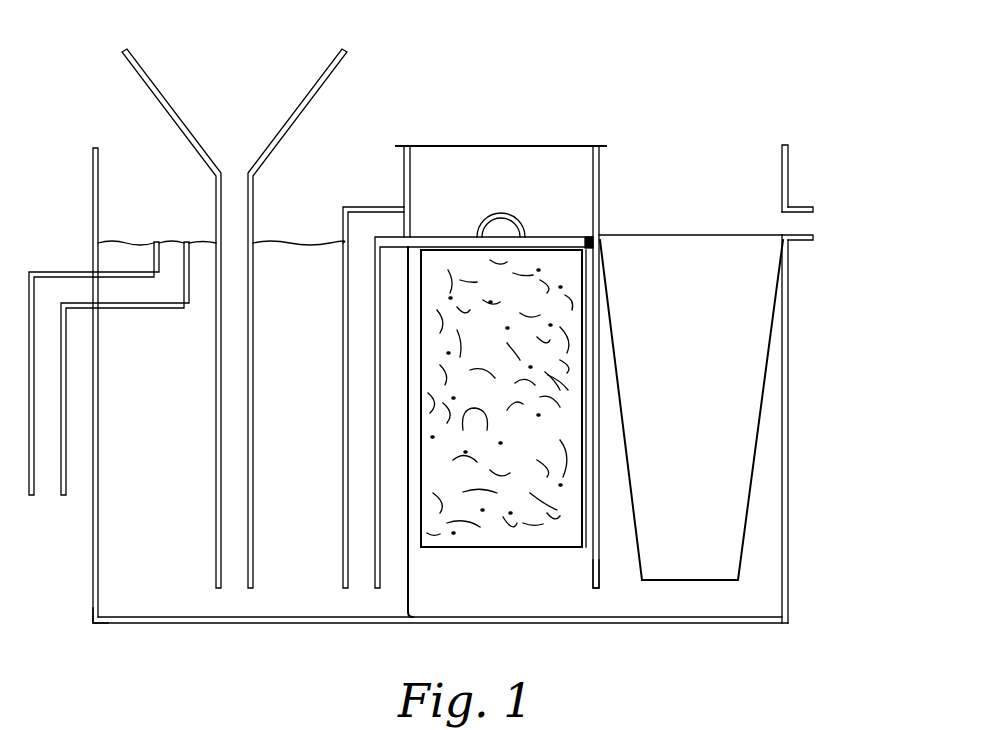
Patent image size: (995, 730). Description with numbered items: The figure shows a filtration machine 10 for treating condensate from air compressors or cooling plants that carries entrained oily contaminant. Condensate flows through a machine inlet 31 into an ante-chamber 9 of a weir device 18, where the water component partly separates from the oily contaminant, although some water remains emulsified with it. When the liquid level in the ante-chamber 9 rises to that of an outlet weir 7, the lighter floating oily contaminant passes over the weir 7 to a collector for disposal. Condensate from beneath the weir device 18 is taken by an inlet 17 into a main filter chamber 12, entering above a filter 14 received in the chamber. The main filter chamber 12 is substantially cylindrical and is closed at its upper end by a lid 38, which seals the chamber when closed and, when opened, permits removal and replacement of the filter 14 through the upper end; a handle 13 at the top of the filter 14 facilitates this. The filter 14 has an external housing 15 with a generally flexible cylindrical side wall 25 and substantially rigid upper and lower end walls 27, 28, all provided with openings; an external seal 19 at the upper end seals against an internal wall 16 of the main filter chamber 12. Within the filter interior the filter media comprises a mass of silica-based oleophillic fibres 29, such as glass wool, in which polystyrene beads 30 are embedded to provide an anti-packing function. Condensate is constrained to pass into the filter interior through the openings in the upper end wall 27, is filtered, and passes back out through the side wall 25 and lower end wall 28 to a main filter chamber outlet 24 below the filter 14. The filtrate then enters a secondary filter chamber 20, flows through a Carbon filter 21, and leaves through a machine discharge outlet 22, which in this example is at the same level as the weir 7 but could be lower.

The filtration machine 10 is at (680, 141).
The weir device 18 is at (102, 187).
The main filter chamber outlet 24 is at (598, 598).
The ante-chamber 9 is at (92, 609).
The secondary filter chamber 20 is at (790, 348).
The machine discharge outlet 22 is at (786, 223).
The outlet weir 7 is at (168, 258).
The machine inlet 31 is at (246, 108).
The inlet 17 is at (381, 213).
The lid 38 is at (508, 145).
The main filter chamber 12 is at (562, 171).
The internal wall 16 is at (589, 508).
The upper end wall 27 is at (441, 245).
The external seal 19 is at (588, 240).
The handle 13 is at (494, 210).
The lower end wall 28 is at (493, 549).
The external housing 15 is at (450, 549).
The filter 14 is at (557, 545).
The polystyrene beads 30 is at (443, 478).
The silica-based oleophillic fibres 29 is at (556, 368).
The side wall 25 is at (578, 284).
The Carbon filter 21 is at (700, 477).